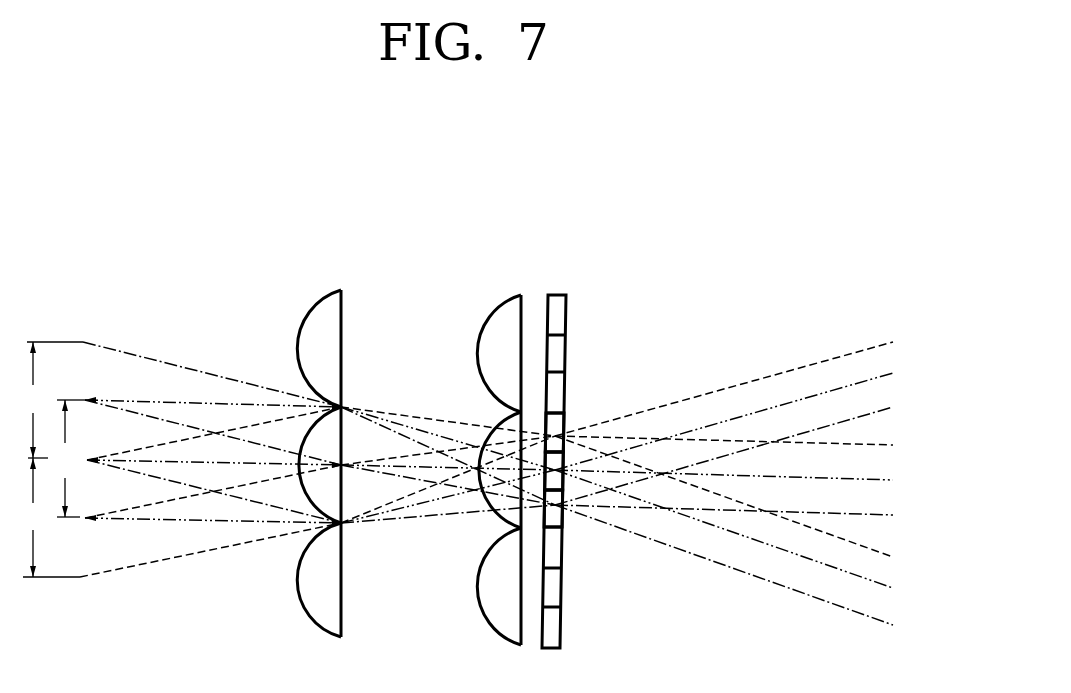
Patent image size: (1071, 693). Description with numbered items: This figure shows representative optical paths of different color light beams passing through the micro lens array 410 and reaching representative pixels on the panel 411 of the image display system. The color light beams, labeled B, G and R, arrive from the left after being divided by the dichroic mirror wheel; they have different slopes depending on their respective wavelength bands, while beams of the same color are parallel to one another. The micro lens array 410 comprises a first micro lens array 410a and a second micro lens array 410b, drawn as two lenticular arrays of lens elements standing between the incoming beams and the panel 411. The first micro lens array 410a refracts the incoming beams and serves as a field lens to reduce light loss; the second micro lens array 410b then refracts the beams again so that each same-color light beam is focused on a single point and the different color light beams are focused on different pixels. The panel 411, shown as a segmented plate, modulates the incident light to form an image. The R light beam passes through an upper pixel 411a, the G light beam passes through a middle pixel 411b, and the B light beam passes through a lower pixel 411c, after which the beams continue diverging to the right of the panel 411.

The micro lens array 410 is at (325, 229).
The first micro lens array 410a is at (337, 289).
The second micro lens array 410b is at (513, 294).
The panel 411 is at (562, 294).
The upper pixel 411a is at (566, 426).
The middle pixel 411b is at (565, 460).
The lower pixel 411c is at (565, 522).
The B light beam B is at (53, 459).
The G light beam G is at (71, 458).
The R light beam R is at (31, 520).